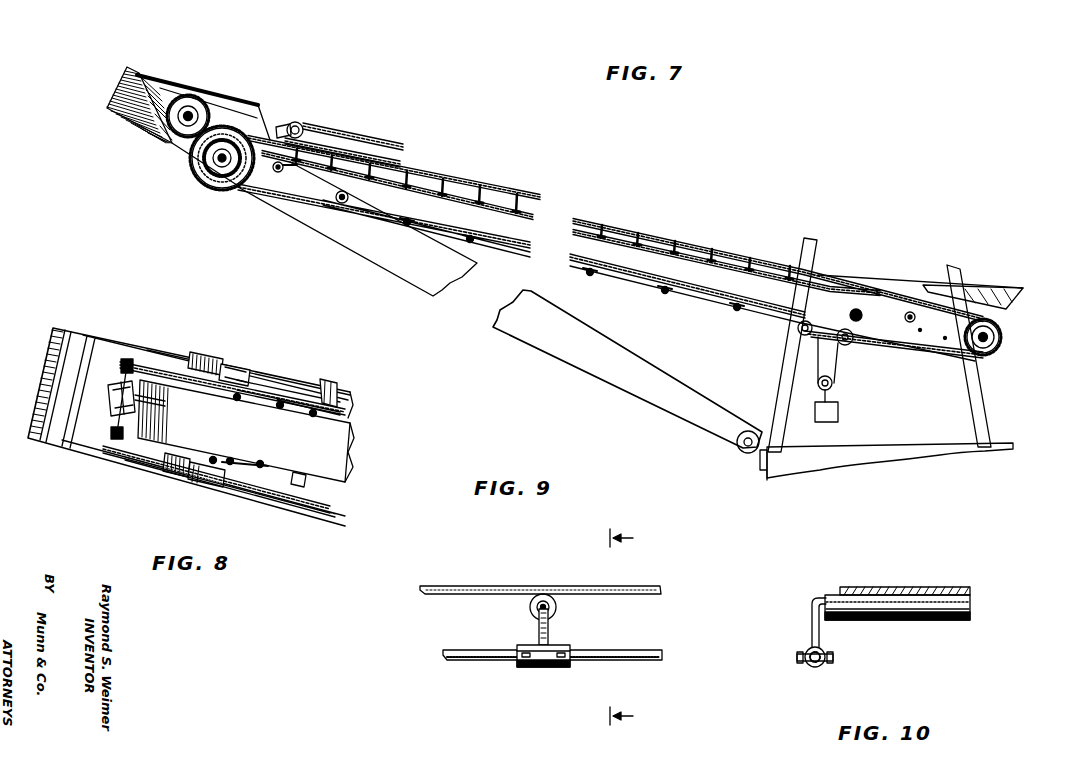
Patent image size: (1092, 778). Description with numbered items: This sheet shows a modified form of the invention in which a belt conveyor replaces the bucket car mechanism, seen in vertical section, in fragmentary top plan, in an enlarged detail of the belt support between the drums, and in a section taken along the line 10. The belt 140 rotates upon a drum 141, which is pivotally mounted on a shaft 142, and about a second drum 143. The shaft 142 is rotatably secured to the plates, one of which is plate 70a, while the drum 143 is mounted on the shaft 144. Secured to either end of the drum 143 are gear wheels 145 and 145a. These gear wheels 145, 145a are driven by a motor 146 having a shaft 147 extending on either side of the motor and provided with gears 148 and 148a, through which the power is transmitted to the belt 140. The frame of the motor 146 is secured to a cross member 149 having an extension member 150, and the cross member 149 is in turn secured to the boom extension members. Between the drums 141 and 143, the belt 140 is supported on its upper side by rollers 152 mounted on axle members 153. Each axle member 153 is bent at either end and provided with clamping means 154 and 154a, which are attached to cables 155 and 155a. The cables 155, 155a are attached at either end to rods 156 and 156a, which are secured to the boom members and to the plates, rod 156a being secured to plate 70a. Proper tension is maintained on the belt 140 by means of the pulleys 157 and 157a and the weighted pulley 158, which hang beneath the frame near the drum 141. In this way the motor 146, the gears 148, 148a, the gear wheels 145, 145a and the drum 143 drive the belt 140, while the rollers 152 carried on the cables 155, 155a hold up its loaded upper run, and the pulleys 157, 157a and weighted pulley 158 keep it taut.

In FIG. 7, the plate 70a is at (1015, 306).
In FIG. 7, the belt 140 is at (630, 230).
In FIG. 8, the belt 140 is at (318, 445).
In FIG. 9, the belt 140 is at (498, 586).
In FIG. 10, the belt 140 is at (902, 584).
In FIG. 7, the drum 141 is at (1002, 337).
In FIG. 7, the shaft 142 is at (988, 341).
In FIG. 7, the drum 143 is at (205, 168).
In FIG. 7, the shaft 144 is at (220, 170).
In FIG. 8, the gear wheel 145 is at (170, 452).
In FIG. 7, the gear wheel 145a is at (233, 137).
In FIG. 8, the gear wheel 145a is at (182, 357).
In FIG. 8, the motor 146 is at (106, 398).
In FIG. 7, the shaft 147 is at (190, 107).
In FIG. 8, the shaft 147 is at (135, 423).
In FIG. 8, the gear 148 is at (108, 433).
In FIG. 7, the gear 148a is at (178, 128).
In FIG. 8, the gear 148a is at (128, 358).
In FIG. 7, the cross member 149 is at (140, 97).
In FIG. 8, the cross member 149 is at (90, 362).
In FIG. 8, the extension member 150 is at (87, 387).
In FIG. 7, the roller 152 is at (478, 204).
In FIG. 8, the roller 152 is at (258, 462).
In FIG. 9, the roller 152 is at (547, 602).
In FIG. 10, the roller 152 is at (923, 612).
In FIG. 9, the axle member 153 is at (550, 627).
In FIG. 10, the axle member 153 is at (811, 624).
In FIG. 8, the clamping means 154 is at (299, 488).
In FIG. 9, the clamping means 154 is at (550, 669).
In FIG. 10, the clamping means 154 is at (798, 656).
In FIG. 7, the clamping means 154a is at (533, 216).
In FIG. 8, the clamping means 154a is at (327, 393).
In FIG. 8, the cable 155 is at (247, 468).
In FIG. 9, the cable 155 is at (488, 665).
In FIG. 10, the cable 155 is at (823, 668).
In FIG. 7, the cable 155a is at (693, 254).
In FIG. 8, the cable 155a is at (270, 398).
In FIG. 8, the rod 156 is at (213, 456).
In FIG. 7, the rod 156a is at (279, 173).
In FIG. 8, the rod 156a is at (222, 362).
In FIG. 7, the pulley 157 is at (797, 328).
In FIG. 7, the pulley 157a is at (850, 346).
In FIG. 7, the weighted pulley 158 is at (833, 384).
In FIG. 9, the section line 10 is at (632, 627).